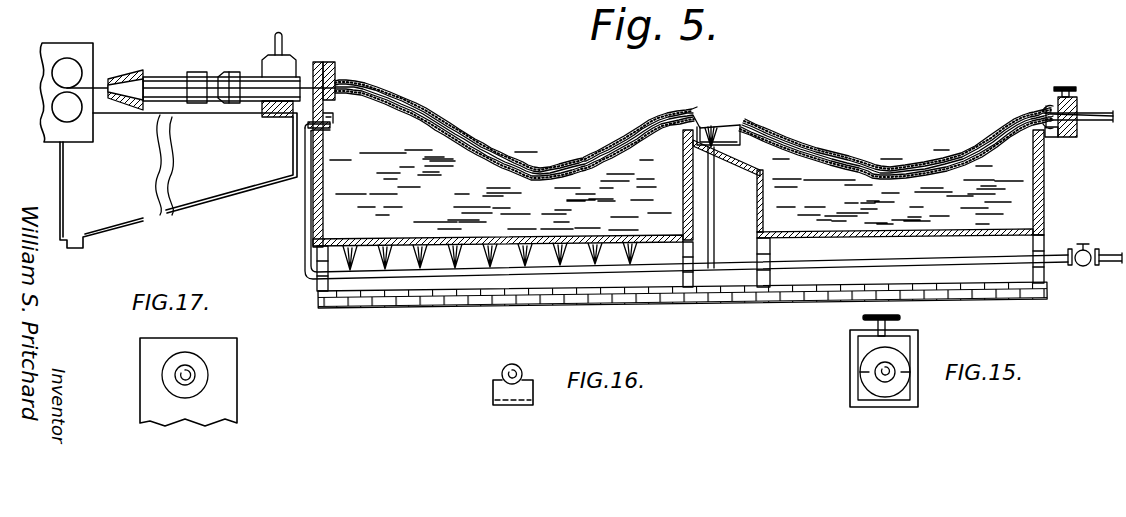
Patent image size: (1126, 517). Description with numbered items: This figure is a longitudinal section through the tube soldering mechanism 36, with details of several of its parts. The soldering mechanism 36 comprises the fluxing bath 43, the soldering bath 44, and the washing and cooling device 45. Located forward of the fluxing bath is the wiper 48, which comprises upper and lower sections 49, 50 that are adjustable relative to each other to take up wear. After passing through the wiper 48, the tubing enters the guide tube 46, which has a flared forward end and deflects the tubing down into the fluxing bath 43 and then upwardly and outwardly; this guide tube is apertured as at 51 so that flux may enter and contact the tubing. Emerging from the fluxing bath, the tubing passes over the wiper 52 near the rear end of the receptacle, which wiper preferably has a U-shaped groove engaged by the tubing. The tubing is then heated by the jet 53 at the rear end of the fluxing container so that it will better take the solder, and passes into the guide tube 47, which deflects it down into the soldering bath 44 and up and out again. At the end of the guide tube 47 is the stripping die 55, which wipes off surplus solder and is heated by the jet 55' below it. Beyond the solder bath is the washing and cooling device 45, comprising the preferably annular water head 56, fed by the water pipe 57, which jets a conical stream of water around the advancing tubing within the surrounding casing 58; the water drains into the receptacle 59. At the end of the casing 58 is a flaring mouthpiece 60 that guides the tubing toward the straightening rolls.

In FIG. 5, the soldering mechanism 36 is at (830, 120).
In FIG. 5, the fluxing bath 43 is at (939, 152).
In FIG. 5, the soldering bath 44 is at (522, 152).
In FIG. 5, the washing and cooling device 45 is at (168, 74).
In FIG. 5, the guide tube 46 is at (1020, 117).
In FIG. 5, the guide tube 47 is at (428, 118).
In FIG. 5, the wiper 48 is at (1077, 99).
In FIG. 15, the wiper 48 is at (918, 385).
In FIG. 5, the upper section 49 is at (1078, 114).
In FIG. 15, the upper section 49 is at (862, 360).
In FIG. 5, the lower section 50 is at (1072, 137).
In FIG. 15, the lower section 50 is at (862, 388).
In FIG. 5, the apertures 51 is at (574, 160).
In FIG. 5, the wiper 52 is at (728, 126).
In FIG. 16, the wiper 52 is at (524, 383).
In FIG. 5, the jet 53 is at (708, 135).
In FIG. 5, the stripping die 55 is at (348, 57).
In FIG. 17, the stripping die 55 is at (206, 382).
In FIG. 5, the jet 55' is at (344, 127).
In FIG. 5, the water head 56 is at (291, 58).
In FIG. 5, the water pipe 57 is at (270, 56).
In FIG. 5, the casing 58 is at (223, 72).
In FIG. 5, the receptacle 59 is at (213, 190).
In FIG. 5, the flaring mouthpiece 60 is at (121, 70).